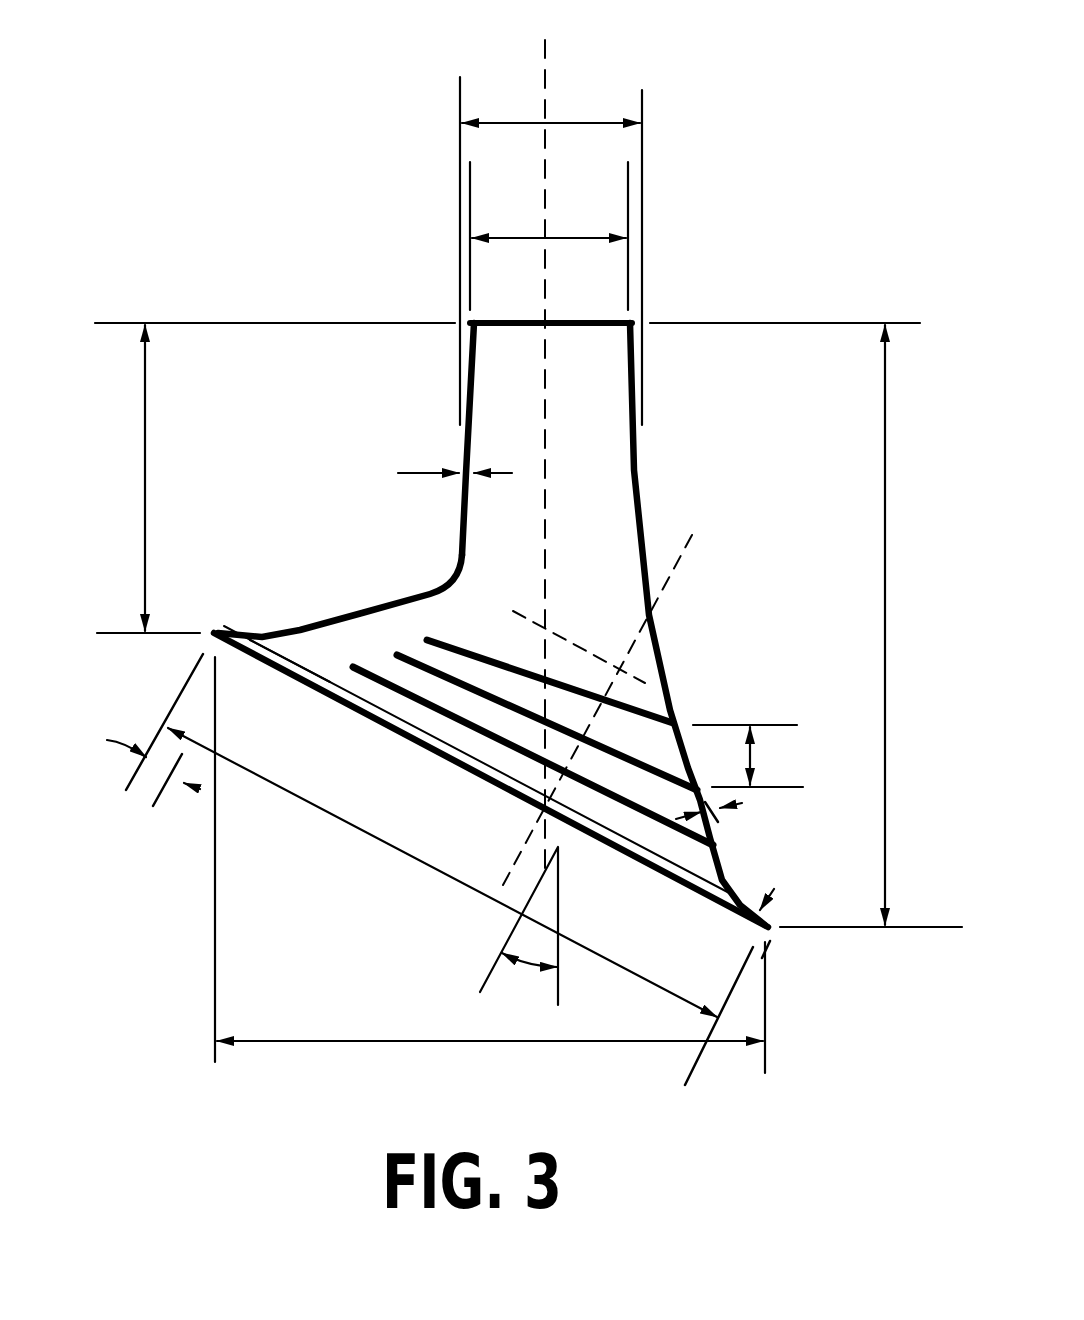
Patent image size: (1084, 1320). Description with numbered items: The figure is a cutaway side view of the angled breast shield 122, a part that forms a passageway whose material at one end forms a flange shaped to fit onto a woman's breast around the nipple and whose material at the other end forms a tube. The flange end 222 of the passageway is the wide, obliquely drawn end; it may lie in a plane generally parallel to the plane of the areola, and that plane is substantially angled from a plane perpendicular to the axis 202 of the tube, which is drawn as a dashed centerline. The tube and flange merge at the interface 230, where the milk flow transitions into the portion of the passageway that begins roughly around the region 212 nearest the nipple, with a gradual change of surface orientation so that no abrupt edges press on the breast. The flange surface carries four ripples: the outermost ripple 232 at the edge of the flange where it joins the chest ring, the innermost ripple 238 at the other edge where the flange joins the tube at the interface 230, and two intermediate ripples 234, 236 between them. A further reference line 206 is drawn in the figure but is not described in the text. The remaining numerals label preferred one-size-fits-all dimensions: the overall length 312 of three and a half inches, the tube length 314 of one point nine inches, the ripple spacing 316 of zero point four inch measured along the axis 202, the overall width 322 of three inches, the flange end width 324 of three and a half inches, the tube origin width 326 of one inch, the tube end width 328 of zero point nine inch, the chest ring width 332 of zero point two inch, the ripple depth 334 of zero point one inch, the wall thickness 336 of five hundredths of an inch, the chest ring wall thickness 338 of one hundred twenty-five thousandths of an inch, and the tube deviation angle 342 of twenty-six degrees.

The breast shield 122 is at (480, 546).
The axis of tube 202 is at (545, 545).
The inclined axis 206 is at (540, 836).
The passageway region 212 is at (583, 333).
The flange end 222 is at (350, 712).
The interface 230 is at (585, 645).
The outermost ripple 232 is at (287, 658).
The ripple 234 is at (367, 667).
The ripple 236 is at (410, 653).
The innermost ripple 238 is at (462, 583).
The overall length 312 is at (885, 502).
The tube length 314 is at (148, 430).
The ripple spacing 316 is at (755, 755).
The overall width 322 is at (312, 1038).
The flange end width 324 is at (316, 813).
The tube origin width 326 is at (583, 125).
The tube end width 328 is at (575, 240).
The chest ring width 332 is at (107, 740).
The ripple depth 334 is at (735, 807).
The wall thickness 336 is at (412, 472).
The chest ring wall thickness 338 is at (746, 932).
The tube deviation angle 342 is at (525, 975).